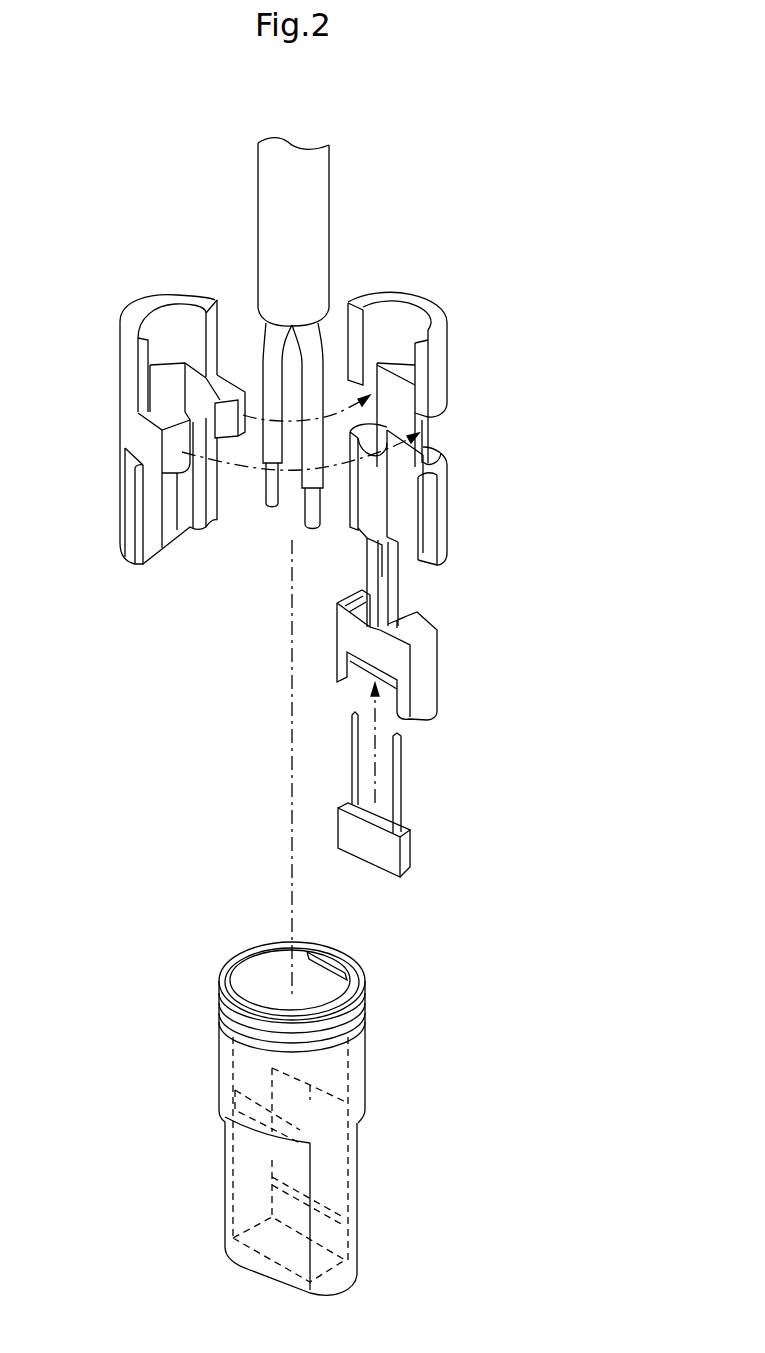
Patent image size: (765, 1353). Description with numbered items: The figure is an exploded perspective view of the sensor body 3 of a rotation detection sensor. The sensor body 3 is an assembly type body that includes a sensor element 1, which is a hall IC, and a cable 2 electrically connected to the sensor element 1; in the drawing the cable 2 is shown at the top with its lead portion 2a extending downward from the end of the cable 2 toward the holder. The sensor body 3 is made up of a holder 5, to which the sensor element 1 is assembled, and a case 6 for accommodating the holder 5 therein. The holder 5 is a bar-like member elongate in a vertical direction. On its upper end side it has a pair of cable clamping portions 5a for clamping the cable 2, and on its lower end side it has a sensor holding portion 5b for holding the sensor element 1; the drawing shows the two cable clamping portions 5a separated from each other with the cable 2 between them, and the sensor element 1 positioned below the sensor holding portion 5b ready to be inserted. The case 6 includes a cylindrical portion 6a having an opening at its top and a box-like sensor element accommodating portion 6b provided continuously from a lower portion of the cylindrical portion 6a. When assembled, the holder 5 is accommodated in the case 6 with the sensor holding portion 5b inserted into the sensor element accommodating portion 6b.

The sensor element 1 is at (406, 850).
The cable 2 is at (268, 169).
The lead wires 2a is at (267, 226).
The sensor body 3 is at (419, 192).
The holder 5 is at (471, 312).
The cable clamping portions 5a is at (124, 383).
The sensor holding portion 5b is at (428, 670).
The case 6 is at (298, 1118).
The cylindrical portion 6a is at (228, 1063).
The sensor element accommodating portion 6b is at (230, 1198).